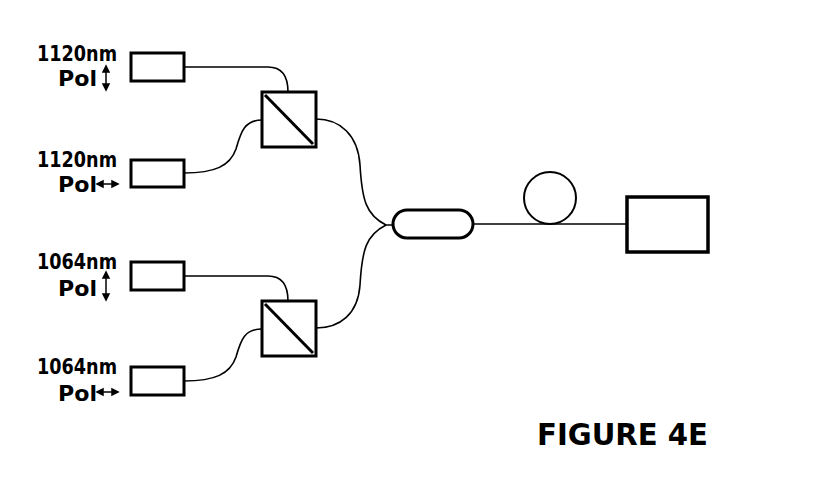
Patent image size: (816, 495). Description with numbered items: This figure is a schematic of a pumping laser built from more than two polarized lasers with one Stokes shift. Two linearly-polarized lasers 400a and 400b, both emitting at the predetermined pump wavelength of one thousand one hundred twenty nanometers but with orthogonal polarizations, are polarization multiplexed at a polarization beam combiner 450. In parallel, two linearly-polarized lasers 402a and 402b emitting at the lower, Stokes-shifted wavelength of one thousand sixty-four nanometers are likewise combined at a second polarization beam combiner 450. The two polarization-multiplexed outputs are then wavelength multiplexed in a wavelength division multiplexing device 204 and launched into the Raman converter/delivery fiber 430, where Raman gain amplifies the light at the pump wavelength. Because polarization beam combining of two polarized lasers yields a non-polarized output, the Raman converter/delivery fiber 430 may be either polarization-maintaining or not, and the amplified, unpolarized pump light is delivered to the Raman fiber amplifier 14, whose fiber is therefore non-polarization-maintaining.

The linearly-polarized laser 400a is at (186, 50).
The linearly-polarized laser 400b is at (198, 185).
The linearly-polarized laser 402a is at (198, 262).
The linearly-polarized laser 402b is at (199, 397).
The polarization beam combiner 450 is at (317, 81).
The wavelength division multiplexing device 204 is at (435, 201).
The Raman converter/delivery fiber 430 is at (573, 167).
The Raman fiber amplifier 14 is at (688, 259).